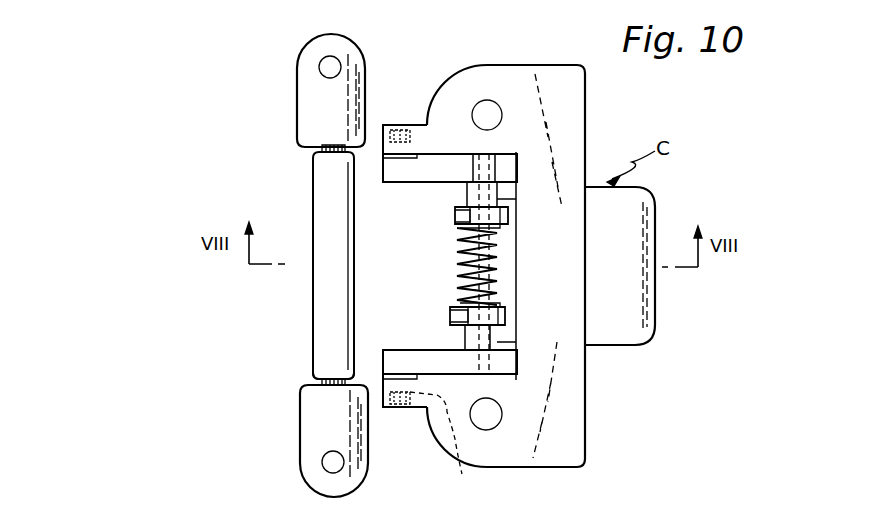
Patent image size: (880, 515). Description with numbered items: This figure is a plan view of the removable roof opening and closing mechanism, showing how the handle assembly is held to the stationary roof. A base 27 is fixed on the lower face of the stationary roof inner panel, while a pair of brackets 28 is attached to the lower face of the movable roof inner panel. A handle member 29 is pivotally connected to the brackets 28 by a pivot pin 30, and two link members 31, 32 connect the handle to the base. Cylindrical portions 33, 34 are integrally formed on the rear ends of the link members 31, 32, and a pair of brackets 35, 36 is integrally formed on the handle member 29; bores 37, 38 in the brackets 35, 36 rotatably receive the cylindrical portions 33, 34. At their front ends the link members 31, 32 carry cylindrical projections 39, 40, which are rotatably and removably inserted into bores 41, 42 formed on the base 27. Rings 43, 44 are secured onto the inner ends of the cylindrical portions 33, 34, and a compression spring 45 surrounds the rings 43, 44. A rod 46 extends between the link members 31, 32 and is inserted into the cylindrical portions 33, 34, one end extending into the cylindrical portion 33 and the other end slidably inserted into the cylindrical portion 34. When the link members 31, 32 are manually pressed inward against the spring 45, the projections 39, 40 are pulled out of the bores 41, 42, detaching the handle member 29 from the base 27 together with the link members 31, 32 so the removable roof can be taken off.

The base 27 is at (572, 115).
The brackets 28 is at (306, 99).
The handle member 29 is at (645, 318).
The pivot pin 30 is at (318, 150).
The link member 31 is at (387, 167).
The link member 32 is at (387, 362).
The cylindrical portion 33 is at (467, 187).
The cylindrical portion 34 is at (465, 338).
The bracket 35 is at (452, 318).
The bracket 36 is at (455, 208).
The bore 37 is at (460, 222).
The bore 38 is at (460, 310).
The cylindrical projection 39 is at (412, 133).
The cylindrical projection 40 is at (437, 444).
The bore 41 is at (393, 148).
The bore 42 is at (395, 405).
The ring 43 is at (497, 225).
The ring 44 is at (497, 300).
The compression spring 45 is at (497, 260).
The rod 46 is at (462, 261).